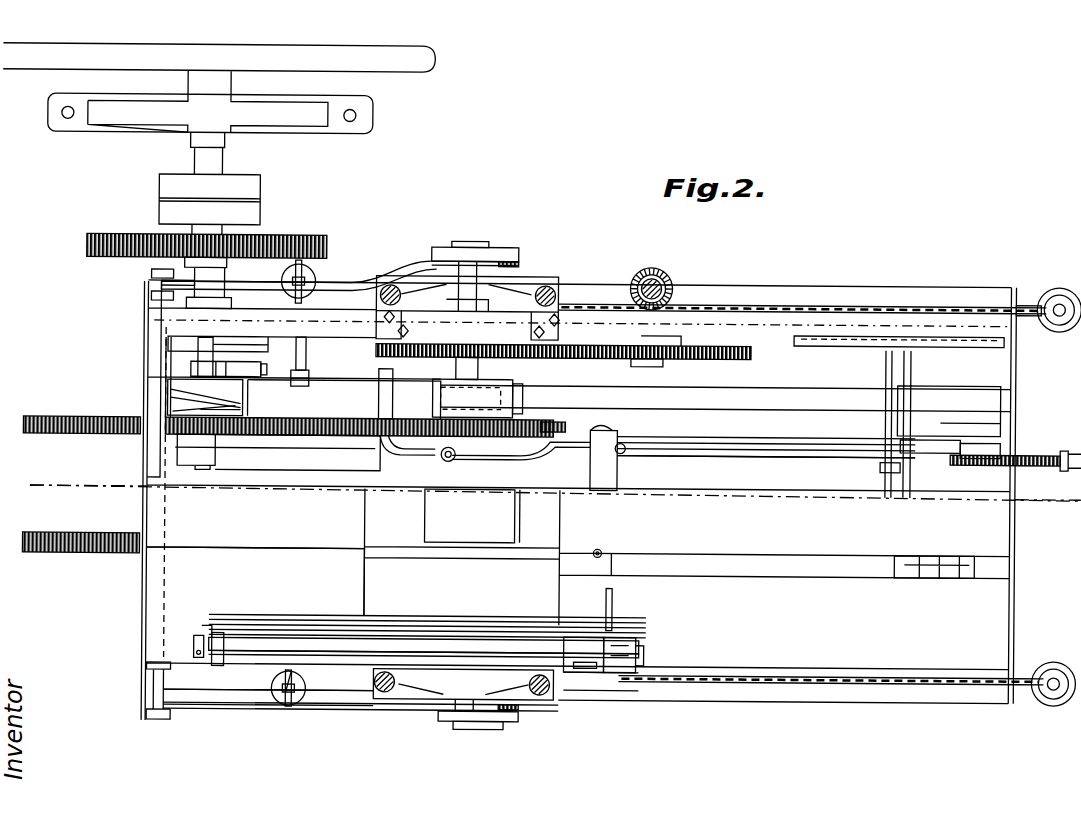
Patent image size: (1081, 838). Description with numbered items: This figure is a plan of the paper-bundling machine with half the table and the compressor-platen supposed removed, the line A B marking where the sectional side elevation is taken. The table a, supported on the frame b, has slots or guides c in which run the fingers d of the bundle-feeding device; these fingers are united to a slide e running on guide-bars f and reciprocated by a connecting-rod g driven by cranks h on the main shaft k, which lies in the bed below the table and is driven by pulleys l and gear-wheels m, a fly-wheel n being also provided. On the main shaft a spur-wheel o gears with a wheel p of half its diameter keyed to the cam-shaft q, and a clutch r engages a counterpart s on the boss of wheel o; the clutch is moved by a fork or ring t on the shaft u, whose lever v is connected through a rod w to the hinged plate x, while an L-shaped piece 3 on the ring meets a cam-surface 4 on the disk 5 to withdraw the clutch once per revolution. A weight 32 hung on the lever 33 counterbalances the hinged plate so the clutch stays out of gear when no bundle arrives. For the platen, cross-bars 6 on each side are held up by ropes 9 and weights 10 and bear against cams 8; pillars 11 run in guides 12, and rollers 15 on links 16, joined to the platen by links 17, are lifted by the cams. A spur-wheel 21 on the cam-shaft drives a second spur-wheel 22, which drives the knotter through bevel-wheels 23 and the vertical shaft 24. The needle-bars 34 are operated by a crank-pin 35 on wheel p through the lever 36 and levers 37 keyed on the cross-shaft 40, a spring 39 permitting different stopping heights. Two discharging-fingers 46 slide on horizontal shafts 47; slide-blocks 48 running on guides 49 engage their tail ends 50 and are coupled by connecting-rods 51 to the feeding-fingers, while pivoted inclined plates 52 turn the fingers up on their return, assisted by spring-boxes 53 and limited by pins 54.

The fly-wheel n is at (406, 66).
The pulleys l is at (258, 195).
The gear-wheels m is at (240, 247).
The weight 32 is at (290, 278).
The links 16 is at (392, 272).
The rollers 15 is at (440, 252).
The cams 8 is at (505, 250).
The links 17 is at (520, 266).
The pillars 11 is at (379, 296).
The cross-bars 6 is at (466, 486).
The vertical shaft 24 is at (672, 280).
The bevel-wheels 23 is at (672, 294).
The ropes 9 is at (772, 304).
The weights 10 is at (1052, 328).
The cam-surface 4 is at (178, 356).
The L-shaped piece 3 is at (222, 348).
The disk 5 is at (262, 352).
The frame b is at (292, 361).
The lever 33 is at (291, 518).
The guides 12 is at (378, 350).
The cam-shaft q is at (478, 370).
The spur-wheel 21 is at (489, 386).
The second spur-wheel 22 is at (700, 358).
The connecting-rods 51 is at (832, 346).
The clutch r is at (205, 393).
The clutch counterpart s is at (210, 410).
The clutch fork or ring t is at (254, 399).
The shaft u is at (343, 400).
The lever v is at (390, 400).
The rod w is at (459, 447).
The crank-pin 35 is at (525, 458).
The wheel p is at (558, 430).
The needle-bars 34 is at (602, 553).
The levers 37 is at (730, 442).
The lever 36 is at (680, 458).
The connecting-rod g is at (735, 472).
The cross-shaft 40 is at (885, 470).
The guide-bars f is at (845, 420).
The fingers d is at (900, 426).
The slide e is at (970, 440).
The spring 39 is at (1048, 448).
The section line point B is at (1048, 491).
The section line point A is at (82, 470).
The spur-wheel o is at (72, 437).
The main shaft k is at (205, 472).
The cranks h is at (262, 462).
The hinged plate x is at (472, 516).
The table a is at (498, 599).
The slots or guides c is at (685, 567).
The pivoted inclined guides or plates 52 is at (415, 624).
The guides 49 is at (328, 647).
The spring-boxes 53 is at (203, 632).
The discharging-fingers 46 is at (606, 626).
The horizontal shafts 47 is at (495, 658).
The pins 54 is at (584, 654).
The slide-blocks 48 is at (628, 657).
The tail ends 50 is at (595, 682).